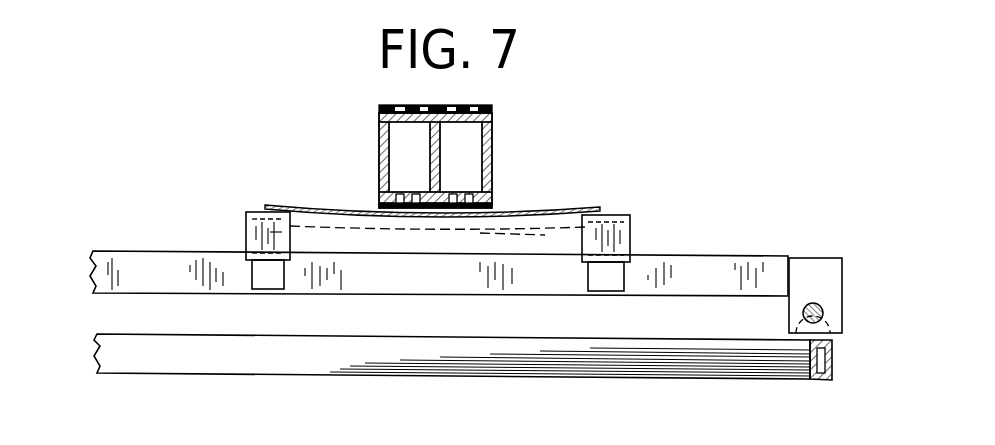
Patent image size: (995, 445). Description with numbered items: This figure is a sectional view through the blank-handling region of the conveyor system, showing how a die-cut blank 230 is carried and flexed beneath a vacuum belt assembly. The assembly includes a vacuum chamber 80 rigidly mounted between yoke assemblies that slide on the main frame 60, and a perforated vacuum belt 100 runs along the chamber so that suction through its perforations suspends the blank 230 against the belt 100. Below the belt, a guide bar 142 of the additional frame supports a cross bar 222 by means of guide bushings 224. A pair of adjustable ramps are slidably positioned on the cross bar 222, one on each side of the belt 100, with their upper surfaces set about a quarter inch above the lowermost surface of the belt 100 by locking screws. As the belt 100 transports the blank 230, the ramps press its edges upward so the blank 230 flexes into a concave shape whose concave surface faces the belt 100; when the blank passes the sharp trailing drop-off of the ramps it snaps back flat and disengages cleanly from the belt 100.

The frame 60 is at (330, 368).
The vacuum chamber 80 is at (378, 122).
The vacuum belt 100 is at (488, 112).
The guide bar 142 is at (813, 323).
The cross bar 222 is at (462, 285).
The guide bushing 224 is at (838, 305).
The die-cut blank 230 is at (324, 205).